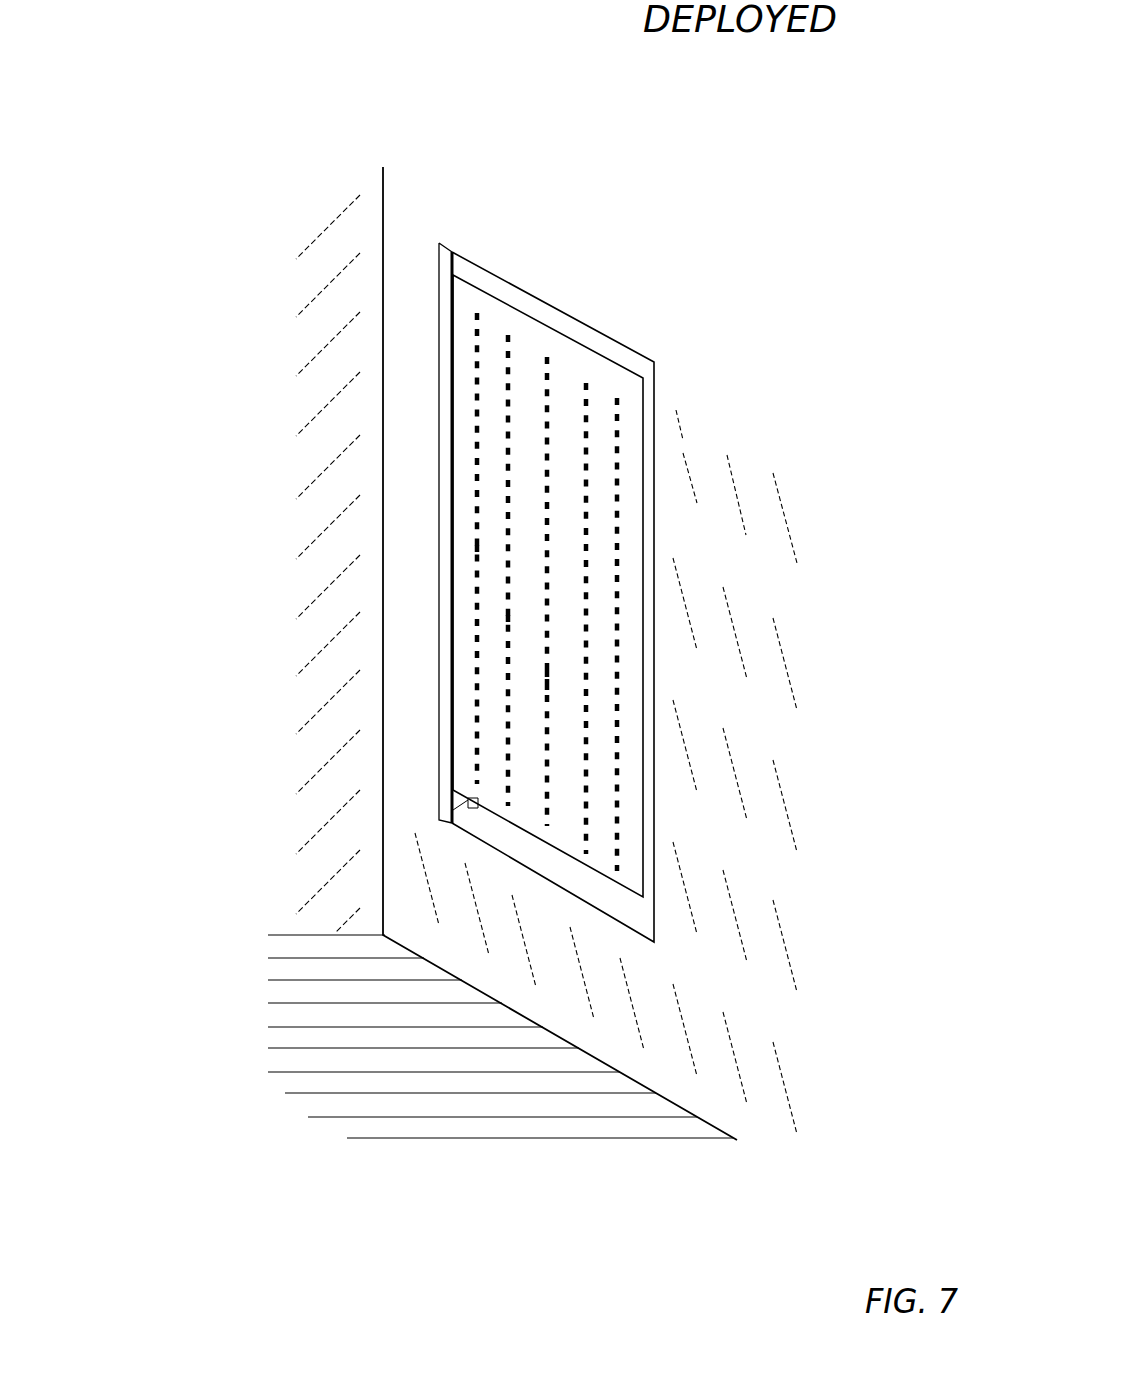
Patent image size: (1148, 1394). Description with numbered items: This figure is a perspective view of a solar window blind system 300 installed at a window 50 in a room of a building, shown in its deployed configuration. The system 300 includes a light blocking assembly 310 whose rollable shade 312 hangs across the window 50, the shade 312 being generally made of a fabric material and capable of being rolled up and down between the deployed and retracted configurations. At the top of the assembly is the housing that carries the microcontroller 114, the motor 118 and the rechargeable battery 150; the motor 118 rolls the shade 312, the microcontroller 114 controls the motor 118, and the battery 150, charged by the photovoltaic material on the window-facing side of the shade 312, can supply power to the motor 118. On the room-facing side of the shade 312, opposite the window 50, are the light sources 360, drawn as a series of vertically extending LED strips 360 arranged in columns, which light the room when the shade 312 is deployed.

The solar window blind system 300 is at (180, 241).
The microcontroller 114 is at (691, 546).
The motor 118 is at (691, 546).
The rechargeable battery 150 is at (691, 546).
The window 50 is at (691, 592).
The light sources 360 is at (540, 672).
The light blocking assembly 310 is at (710, 592).
The rollable shade 312 is at (632, 744).